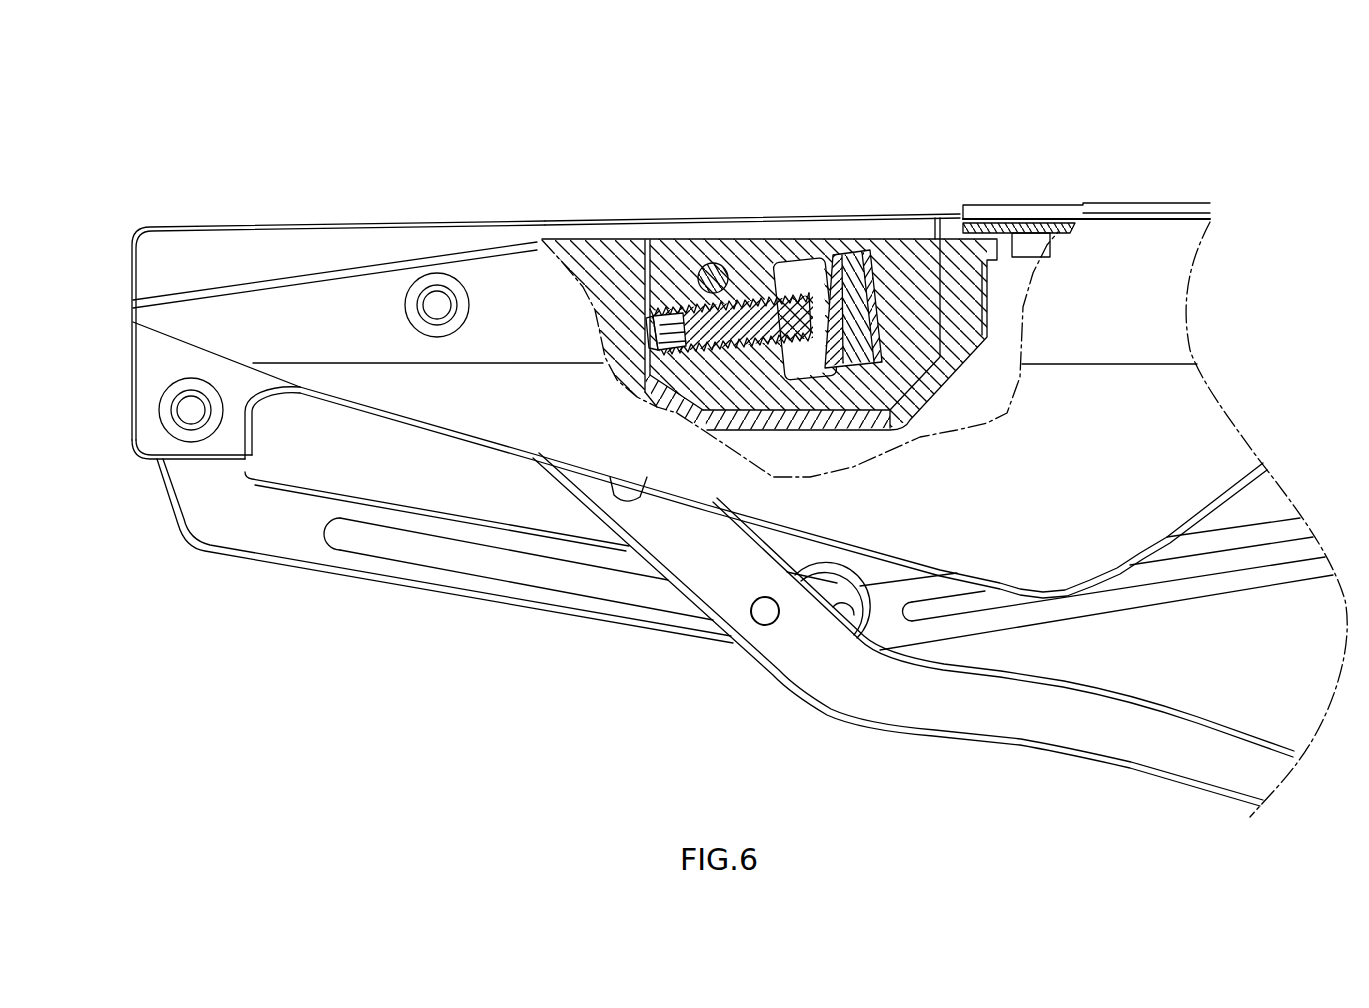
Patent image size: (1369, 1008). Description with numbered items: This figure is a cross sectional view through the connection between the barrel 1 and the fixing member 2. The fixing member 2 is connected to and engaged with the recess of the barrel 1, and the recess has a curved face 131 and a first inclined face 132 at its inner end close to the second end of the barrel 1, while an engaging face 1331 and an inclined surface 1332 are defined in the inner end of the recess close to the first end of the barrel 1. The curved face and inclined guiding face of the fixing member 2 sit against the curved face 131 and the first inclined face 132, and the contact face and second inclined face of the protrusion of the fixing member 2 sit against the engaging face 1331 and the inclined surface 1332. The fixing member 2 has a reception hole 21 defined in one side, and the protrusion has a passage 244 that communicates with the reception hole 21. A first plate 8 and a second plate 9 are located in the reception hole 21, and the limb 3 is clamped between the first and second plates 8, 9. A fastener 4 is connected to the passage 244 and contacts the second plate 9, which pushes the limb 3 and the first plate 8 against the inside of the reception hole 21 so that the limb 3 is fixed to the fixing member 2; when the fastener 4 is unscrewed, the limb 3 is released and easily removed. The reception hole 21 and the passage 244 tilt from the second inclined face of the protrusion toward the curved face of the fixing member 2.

The barrel 1 is at (1132, 165).
The fixing member 2 is at (733, 214).
The limb 3 is at (850, 262).
The fastener 4 is at (742, 300).
The first plate 8 is at (867, 250).
The second plate 9 is at (818, 268).
The reception hole 21 is at (793, 257).
The passage 244 is at (680, 313).
The engaging face 1331 is at (636, 240).
The inclined surface 1332 is at (650, 408).
The curved face 131 is at (945, 282).
The first inclined face 132 is at (912, 392).